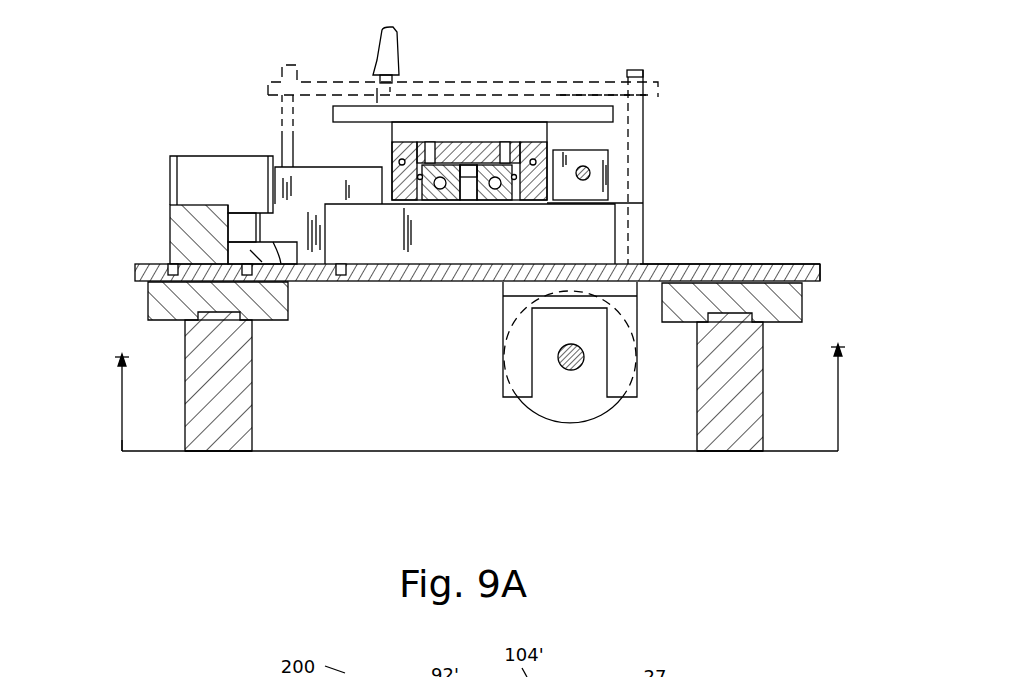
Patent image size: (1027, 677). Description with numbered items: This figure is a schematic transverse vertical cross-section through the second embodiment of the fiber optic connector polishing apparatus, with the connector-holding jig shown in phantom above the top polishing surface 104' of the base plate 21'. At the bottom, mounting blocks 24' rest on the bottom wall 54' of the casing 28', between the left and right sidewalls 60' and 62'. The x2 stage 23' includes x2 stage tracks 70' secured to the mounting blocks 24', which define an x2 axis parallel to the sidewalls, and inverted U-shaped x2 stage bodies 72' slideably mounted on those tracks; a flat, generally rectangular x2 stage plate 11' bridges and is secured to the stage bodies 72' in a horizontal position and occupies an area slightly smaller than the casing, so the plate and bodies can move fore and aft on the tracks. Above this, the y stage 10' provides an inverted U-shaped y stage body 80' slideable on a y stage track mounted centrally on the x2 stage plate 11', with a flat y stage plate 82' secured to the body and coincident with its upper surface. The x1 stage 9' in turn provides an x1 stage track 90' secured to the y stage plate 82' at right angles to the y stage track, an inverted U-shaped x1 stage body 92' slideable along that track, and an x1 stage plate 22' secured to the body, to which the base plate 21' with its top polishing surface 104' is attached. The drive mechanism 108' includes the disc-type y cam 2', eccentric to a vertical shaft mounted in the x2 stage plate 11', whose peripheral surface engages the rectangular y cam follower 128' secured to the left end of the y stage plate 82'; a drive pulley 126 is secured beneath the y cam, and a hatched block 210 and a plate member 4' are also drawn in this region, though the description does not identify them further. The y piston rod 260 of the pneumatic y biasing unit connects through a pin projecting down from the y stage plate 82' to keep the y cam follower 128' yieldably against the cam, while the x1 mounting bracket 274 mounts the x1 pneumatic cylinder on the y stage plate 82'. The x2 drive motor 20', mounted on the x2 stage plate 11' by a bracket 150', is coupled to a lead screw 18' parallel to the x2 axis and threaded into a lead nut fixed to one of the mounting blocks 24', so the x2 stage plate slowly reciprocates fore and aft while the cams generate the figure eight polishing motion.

The y cam 2' is at (175, 144).
The y cam follower 128' is at (277, 125).
The drive pulley 126 is at (238, 228).
The support block 210 is at (168, 235).
The x2 stage bodies 72' is at (456, 294).
The x2 stage tracks 70' is at (501, 381).
The mounting blocks 24' is at (476, 487).
The base plate 4' is at (477, 297).
The bottom wall 54' is at (480, 480).
The left sidewall 60' is at (92, 400).
The right sidewall 62' is at (863, 397).
The casing 28' is at (85, 472).
The drive mechanism 108' is at (418, 463).
The x2 drive motor 20' is at (570, 402).
The bracket 150' is at (598, 411).
The lead screw 18' is at (520, 426).
The y stage body 80' is at (461, 271).
The y stage 10' is at (673, 167).
The x2 stage plate 11' is at (730, 236).
The x2 stage 23' is at (855, 230).
The top polishing surface 104' is at (504, 80).
The base plate 21' is at (672, 63).
The x1 stage plate 22' is at (573, 89).
The x1 stage body 92' is at (469, 109).
The x1 stage track 90' is at (490, 206).
The x1 stage 9' is at (576, 83).
The x1 mounting bracket 274 is at (553, 150).
The y piston rod 260 is at (590, 173).
The y stage plate 82' is at (653, 189).